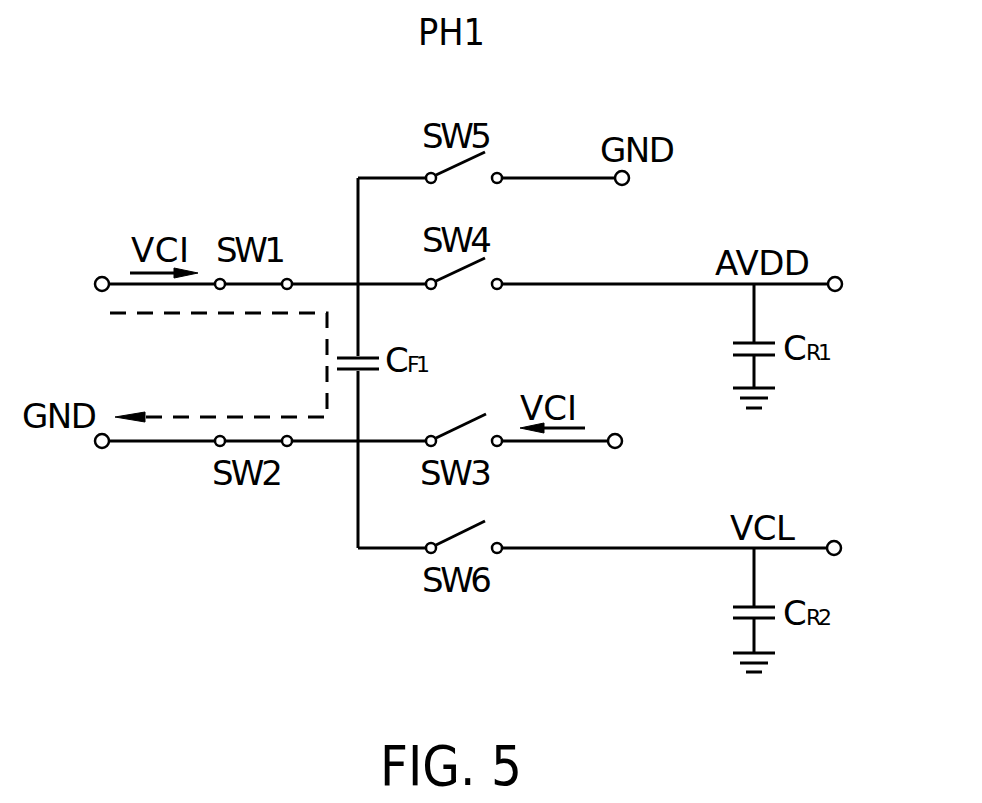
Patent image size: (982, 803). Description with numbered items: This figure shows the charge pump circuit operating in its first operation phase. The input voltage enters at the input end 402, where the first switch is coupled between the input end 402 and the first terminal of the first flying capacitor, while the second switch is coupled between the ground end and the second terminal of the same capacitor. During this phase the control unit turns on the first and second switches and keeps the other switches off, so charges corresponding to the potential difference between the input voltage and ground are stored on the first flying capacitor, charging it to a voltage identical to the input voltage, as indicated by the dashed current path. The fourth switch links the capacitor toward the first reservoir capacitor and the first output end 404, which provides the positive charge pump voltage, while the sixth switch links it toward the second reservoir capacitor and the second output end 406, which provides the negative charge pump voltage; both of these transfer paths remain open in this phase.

The input end 402 is at (103, 276).
The first output end 404 is at (836, 276).
The second output end 406 is at (835, 540).